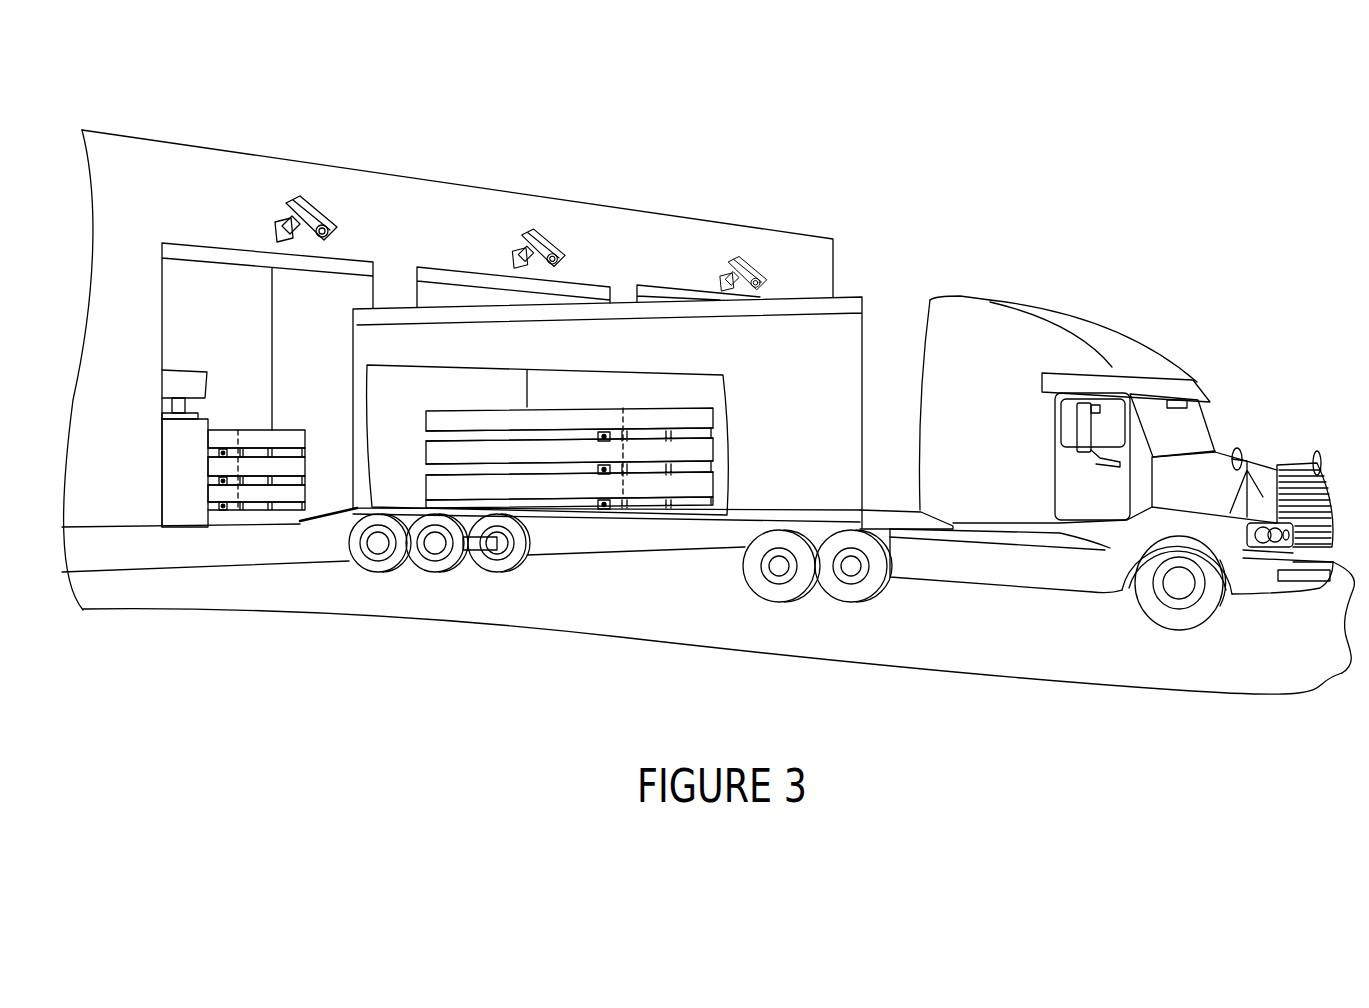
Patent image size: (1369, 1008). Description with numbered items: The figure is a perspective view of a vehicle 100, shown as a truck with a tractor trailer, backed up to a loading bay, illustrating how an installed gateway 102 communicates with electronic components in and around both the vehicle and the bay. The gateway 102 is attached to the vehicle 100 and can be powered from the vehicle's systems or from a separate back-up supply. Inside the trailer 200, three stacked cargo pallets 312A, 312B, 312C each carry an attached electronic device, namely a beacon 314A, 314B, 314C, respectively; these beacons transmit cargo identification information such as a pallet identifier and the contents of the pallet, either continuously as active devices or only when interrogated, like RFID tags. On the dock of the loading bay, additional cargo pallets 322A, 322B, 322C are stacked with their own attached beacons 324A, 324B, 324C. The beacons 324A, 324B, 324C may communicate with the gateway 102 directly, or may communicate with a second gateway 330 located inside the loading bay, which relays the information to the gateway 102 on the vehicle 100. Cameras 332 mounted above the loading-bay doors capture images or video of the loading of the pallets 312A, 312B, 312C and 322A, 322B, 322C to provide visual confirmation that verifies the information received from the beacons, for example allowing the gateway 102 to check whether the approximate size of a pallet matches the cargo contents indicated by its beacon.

The vehicle 100 is at (1105, 328).
The gateway 102 is at (1180, 417).
The trailer 200 is at (900, 298).
The cargo pallet 312A is at (438, 420).
The cargo pallet 312B is at (438, 450).
The cargo pallet 312C is at (438, 485).
The electronic device (beacon) 314A is at (610, 434).
The electronic device (beacon) 314B is at (610, 472).
The electronic device (beacon) 314C is at (610, 506).
The cargo pallet 322A is at (273, 439).
The cargo pallet 322B is at (260, 465).
The cargo pallet 322C is at (260, 495).
The beacon 324A is at (217, 453).
The beacon 324B is at (217, 480).
The beacon 324C is at (217, 507).
The second gateway 330 is at (168, 387).
The cameras 332 is at (318, 222).